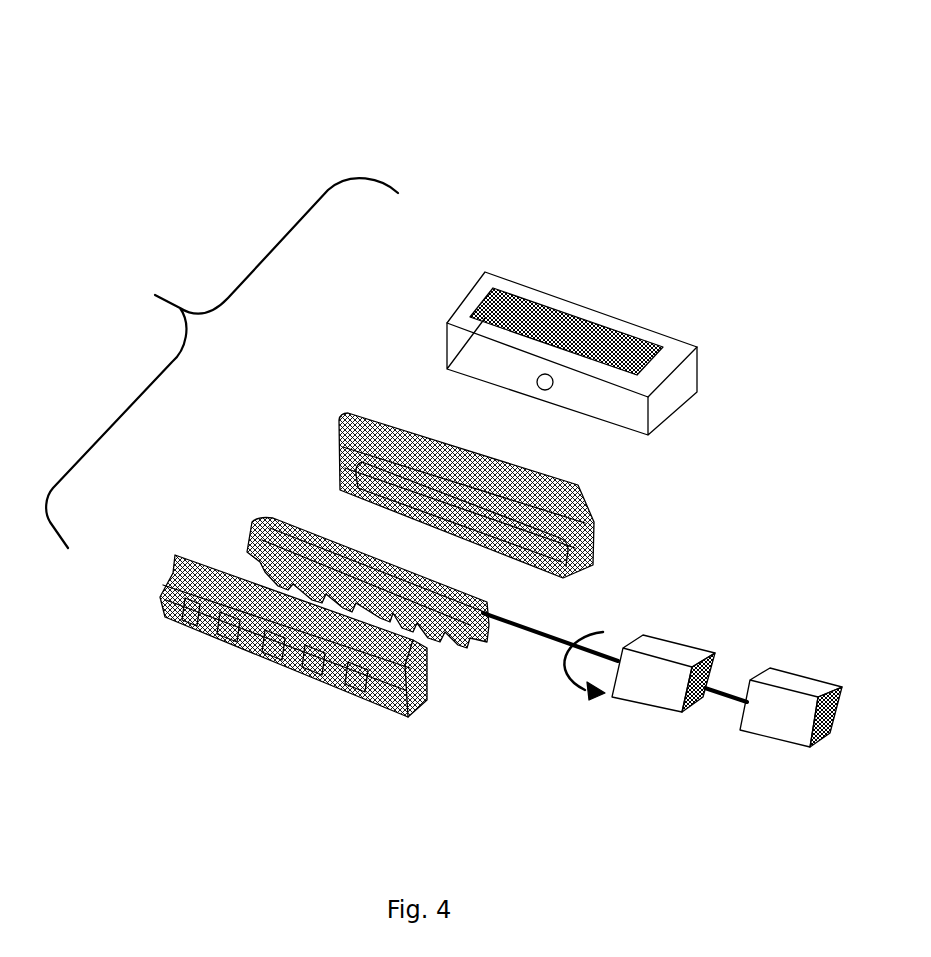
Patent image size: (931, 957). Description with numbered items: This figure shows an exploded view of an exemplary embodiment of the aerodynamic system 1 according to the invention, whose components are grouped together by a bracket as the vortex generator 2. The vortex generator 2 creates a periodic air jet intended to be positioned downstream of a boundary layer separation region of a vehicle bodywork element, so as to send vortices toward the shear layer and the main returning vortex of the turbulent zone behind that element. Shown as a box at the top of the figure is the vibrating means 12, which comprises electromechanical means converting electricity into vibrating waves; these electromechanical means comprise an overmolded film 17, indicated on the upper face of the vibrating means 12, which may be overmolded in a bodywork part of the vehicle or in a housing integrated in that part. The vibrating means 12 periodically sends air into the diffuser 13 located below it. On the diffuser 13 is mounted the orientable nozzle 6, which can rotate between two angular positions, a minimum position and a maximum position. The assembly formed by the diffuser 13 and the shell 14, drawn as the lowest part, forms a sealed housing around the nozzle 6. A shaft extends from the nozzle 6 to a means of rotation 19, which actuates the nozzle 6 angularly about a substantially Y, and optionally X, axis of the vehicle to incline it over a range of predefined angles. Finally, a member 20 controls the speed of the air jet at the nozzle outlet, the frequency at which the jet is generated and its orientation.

The aerodynamic system 1 is at (522, 148).
The vortex generator 2 is at (222, 363).
The orientable nozzle 6 is at (259, 505).
The vibrating means 12 is at (546, 320).
The diffuser 13 is at (346, 407).
The shell 14 is at (160, 570).
The overmolded film 17 is at (549, 317).
The means of rotation 19 is at (663, 673).
The control member 20 is at (791, 707).